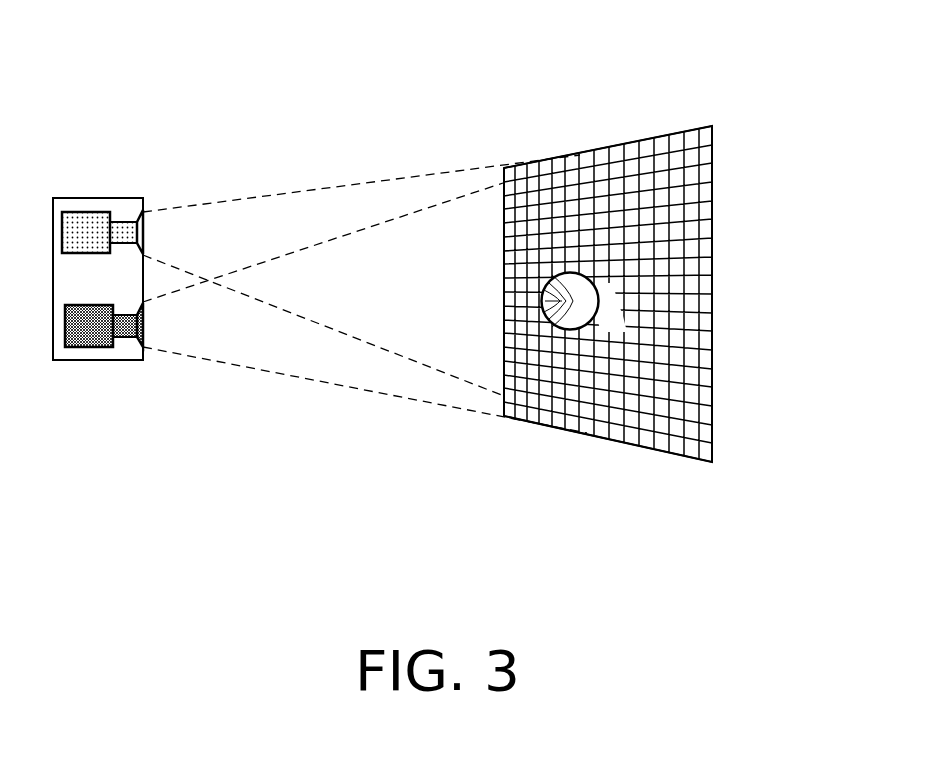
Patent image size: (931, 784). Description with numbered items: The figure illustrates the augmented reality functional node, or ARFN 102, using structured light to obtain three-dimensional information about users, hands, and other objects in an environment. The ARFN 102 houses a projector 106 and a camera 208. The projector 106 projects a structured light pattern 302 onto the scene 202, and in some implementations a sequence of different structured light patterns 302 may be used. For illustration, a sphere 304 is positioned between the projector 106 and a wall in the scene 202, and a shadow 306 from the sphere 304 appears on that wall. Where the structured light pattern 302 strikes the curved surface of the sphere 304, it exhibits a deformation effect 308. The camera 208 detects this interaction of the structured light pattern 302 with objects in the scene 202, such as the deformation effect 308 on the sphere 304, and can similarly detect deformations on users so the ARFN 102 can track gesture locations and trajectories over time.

The ARFN 102 is at (82, 360).
The projector 106 is at (88, 232).
The camera 208 is at (105, 347).
The structured light pattern 302 is at (503, 185).
The sphere 304 is at (565, 268).
The shadow 306 is at (610, 292).
The deformation effect 308 is at (549, 320).
The scene 202 is at (727, 460).